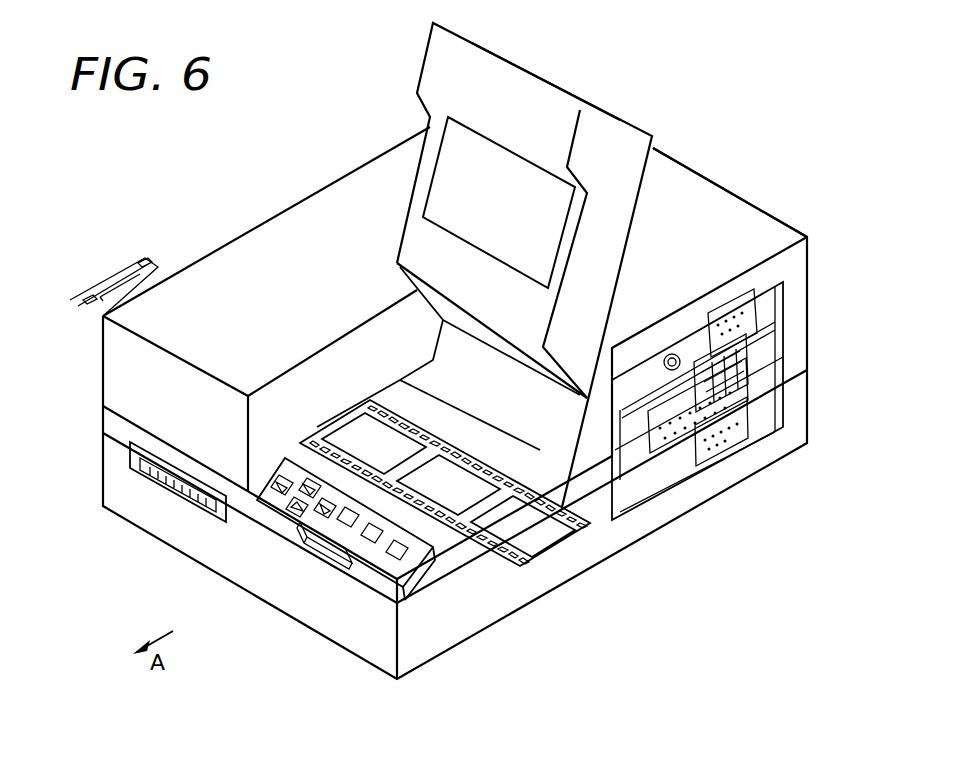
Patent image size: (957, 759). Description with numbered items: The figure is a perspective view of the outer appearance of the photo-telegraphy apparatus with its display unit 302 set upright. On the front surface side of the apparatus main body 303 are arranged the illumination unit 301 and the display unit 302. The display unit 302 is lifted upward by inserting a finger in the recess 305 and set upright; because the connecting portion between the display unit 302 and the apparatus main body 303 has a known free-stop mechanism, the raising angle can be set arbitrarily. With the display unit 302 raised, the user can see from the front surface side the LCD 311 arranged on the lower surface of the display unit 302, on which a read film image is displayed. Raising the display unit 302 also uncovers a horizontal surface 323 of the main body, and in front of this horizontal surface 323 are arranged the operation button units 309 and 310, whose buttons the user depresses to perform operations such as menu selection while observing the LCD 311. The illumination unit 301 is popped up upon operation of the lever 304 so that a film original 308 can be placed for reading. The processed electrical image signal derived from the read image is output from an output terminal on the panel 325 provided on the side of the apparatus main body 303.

The illumination unit 301 is at (240, 253).
The display unit 302 is at (622, 120).
The apparatus main body 303 is at (753, 230).
The lever 304 is at (167, 493).
The recess 305 is at (322, 548).
The film original 308 is at (572, 540).
The operation button unit 309 is at (270, 488).
The operation button unit 310 is at (373, 559).
The LCD (liquid crystal display) 311 is at (448, 173).
The horizontal surface 323 is at (472, 435).
The panel 325 is at (790, 292).